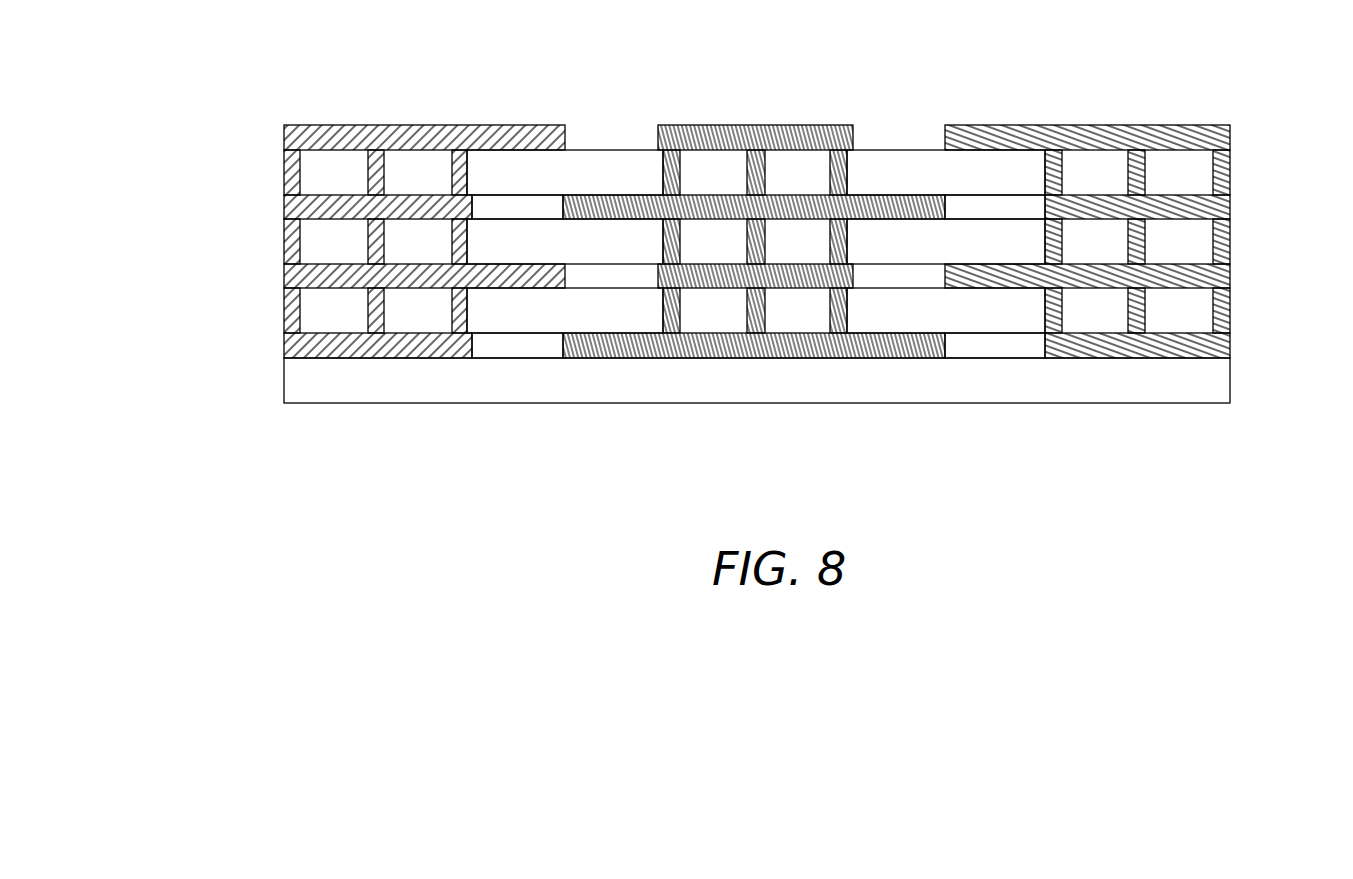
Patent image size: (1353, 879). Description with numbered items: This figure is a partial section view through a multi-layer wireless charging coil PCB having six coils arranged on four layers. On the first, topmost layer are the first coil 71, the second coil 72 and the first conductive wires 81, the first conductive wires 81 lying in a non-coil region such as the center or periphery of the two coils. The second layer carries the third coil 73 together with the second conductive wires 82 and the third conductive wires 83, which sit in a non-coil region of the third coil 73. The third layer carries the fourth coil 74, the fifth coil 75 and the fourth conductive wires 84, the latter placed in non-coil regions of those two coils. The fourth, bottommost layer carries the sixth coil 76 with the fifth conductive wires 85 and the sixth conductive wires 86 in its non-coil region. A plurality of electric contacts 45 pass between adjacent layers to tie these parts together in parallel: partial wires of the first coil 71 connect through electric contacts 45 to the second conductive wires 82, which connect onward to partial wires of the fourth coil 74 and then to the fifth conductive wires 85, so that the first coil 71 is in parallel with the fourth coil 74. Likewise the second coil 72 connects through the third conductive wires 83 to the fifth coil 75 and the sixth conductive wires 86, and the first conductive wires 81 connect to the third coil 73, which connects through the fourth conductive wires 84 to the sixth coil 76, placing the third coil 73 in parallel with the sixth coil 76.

The electric contacts 45 is at (284, 297).
The first coil 71 is at (423, 128).
The second coil 72 is at (1080, 125).
The third coil 73 is at (620, 195).
The fourth coil 74 is at (522, 288).
The fifth coil 75 is at (980, 287).
The sixth coil 76 is at (740, 357).
The first conductive wires 81 is at (745, 125).
The second conductive wires 82 is at (332, 195).
The third conductive wires 83 is at (1185, 195).
The fourth conductive wires 84 is at (800, 283).
The fifth conductive wires 85 is at (362, 358).
The sixth conductive wires 86 is at (1133, 357).